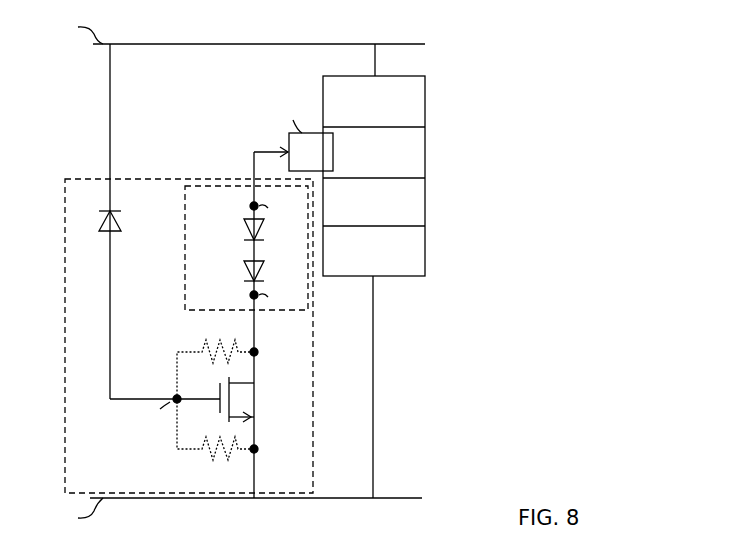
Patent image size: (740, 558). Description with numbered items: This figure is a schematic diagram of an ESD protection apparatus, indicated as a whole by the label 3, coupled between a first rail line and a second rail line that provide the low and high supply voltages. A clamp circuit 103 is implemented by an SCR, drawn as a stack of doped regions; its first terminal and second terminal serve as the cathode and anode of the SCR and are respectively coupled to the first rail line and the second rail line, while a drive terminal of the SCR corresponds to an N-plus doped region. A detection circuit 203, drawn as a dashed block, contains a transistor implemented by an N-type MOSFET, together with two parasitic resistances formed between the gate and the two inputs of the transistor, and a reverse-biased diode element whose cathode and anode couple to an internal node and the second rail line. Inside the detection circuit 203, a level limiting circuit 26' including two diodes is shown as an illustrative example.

The semiconductor device 3 is at (609, 29).
The clamp circuit 103 is at (437, 102).
The detection circuit 203 is at (160, 179).
The level limiting circuit 26' is at (246, 224).